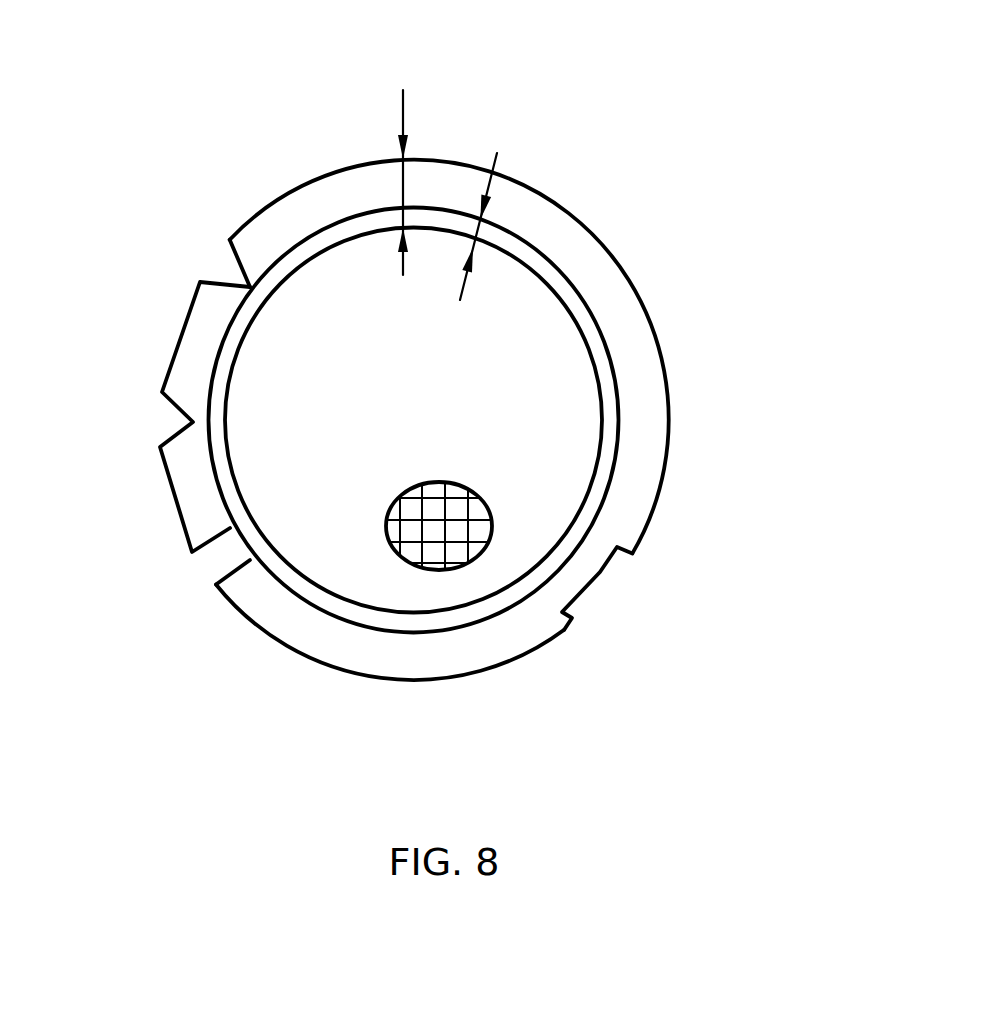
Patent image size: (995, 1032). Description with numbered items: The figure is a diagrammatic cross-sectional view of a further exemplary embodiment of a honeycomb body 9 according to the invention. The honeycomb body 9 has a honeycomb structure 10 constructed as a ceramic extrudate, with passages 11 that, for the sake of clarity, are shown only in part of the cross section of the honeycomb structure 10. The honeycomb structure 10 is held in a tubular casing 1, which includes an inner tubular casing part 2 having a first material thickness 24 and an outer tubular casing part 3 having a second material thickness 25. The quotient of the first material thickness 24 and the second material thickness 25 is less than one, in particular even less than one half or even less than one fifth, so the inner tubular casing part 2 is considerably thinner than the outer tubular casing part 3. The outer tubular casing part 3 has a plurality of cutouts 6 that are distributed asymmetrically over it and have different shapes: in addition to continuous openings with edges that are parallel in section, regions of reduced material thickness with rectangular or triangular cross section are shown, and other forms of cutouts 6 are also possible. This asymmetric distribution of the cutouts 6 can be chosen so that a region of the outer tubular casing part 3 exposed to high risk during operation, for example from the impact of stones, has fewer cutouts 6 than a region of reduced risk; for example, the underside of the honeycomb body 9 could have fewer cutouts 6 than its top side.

The tubular casing 1 is at (630, 510).
The inner tubular casing part 2 is at (610, 422).
The outer tubular casing part 3 is at (633, 485).
The cutouts 6 is at (600, 570).
The honeycomb body 9 is at (597, 196).
The honeycomb structure 10 is at (523, 418).
The passages 11 is at (455, 532).
The first material thickness 24 is at (497, 160).
The second material thickness 25 is at (403, 110).